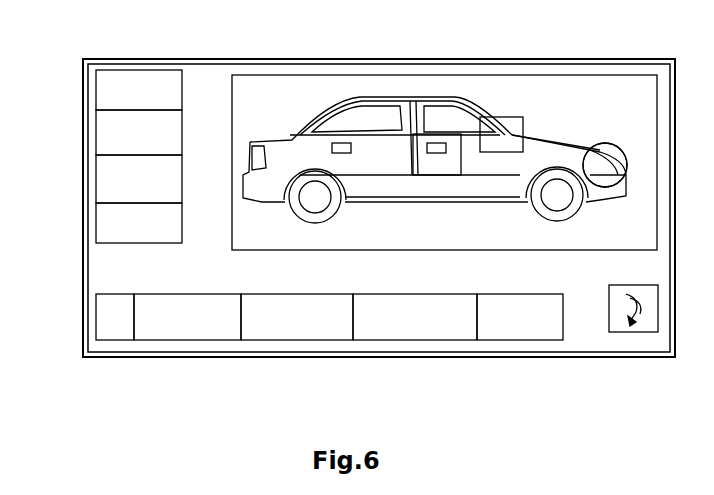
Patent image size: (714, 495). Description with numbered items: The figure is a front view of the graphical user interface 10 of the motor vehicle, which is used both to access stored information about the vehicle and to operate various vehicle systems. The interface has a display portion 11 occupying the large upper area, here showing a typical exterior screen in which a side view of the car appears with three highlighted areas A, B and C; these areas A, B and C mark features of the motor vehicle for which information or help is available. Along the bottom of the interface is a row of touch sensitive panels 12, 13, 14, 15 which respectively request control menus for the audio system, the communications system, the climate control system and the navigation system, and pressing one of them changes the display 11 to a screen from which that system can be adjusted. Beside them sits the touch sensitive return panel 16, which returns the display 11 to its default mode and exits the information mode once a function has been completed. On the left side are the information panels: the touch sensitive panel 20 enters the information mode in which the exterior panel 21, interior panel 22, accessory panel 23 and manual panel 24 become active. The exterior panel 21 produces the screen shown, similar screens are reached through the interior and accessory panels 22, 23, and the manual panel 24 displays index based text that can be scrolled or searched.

The graphical user interface 10 is at (106, 54).
The display portion 11 is at (232, 73).
The touch sensitive panel 12 is at (192, 338).
The touch sensitive panel 13 is at (297, 338).
The touch sensitive panel 14 is at (411, 338).
The touch sensitive panel 15 is at (518, 338).
The touch sensitive return panel 16 is at (619, 332).
The touch sensitive panel 20 is at (106, 338).
The exterior panel 21 is at (96, 93).
The interior panel 22 is at (96, 130).
The accessory panel 23 is at (96, 173).
The manual panel 24 is at (96, 218).
The highlighted area A is at (424, 124).
The highlighted area B is at (496, 106).
The highlighted area C is at (592, 126).